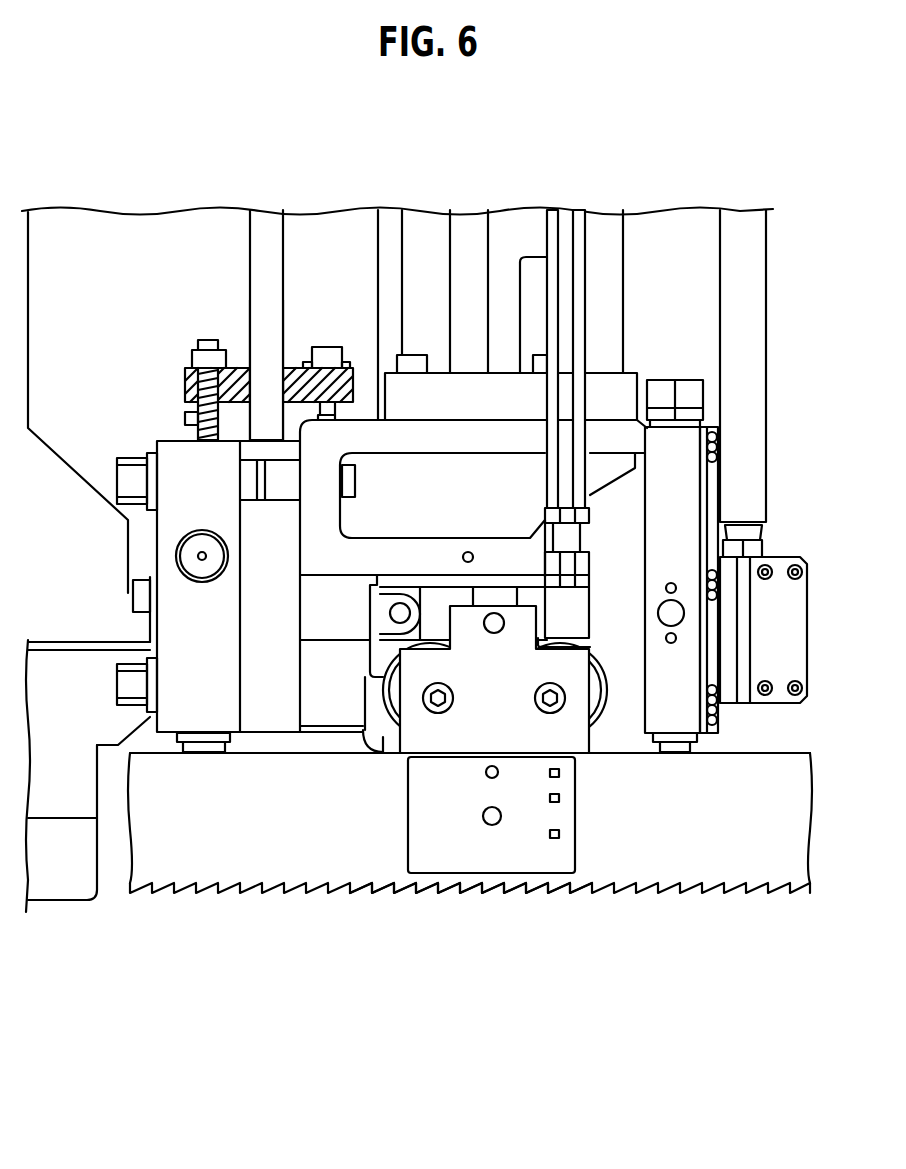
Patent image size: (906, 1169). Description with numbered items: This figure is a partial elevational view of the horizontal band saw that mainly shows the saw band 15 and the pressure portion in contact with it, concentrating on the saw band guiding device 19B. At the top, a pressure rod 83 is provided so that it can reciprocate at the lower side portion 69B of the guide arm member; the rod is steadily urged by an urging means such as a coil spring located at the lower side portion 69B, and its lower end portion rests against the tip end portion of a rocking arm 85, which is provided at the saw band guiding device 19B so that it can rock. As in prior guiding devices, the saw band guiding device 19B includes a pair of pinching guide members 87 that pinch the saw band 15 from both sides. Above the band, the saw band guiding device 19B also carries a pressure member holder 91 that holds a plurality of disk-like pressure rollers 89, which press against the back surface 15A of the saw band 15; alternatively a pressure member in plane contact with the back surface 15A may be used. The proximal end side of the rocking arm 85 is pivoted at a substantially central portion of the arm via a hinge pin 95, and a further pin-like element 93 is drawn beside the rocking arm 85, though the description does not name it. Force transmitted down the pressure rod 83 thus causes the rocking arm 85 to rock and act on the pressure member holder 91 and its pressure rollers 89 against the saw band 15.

The saw band 15 is at (313, 874).
The back surface of the saw band 15A is at (742, 753).
The saw band guiding device 19B is at (503, 908).
The lower side portion of the guide arm member 69B is at (70, 468).
The pressure rod 83 is at (562, 302).
The rocking arm 85 is at (563, 613).
The pinching guide members 87 is at (428, 863).
The pressure rollers 89 is at (390, 702).
The pressure member holder 91 is at (512, 728).
The pin 93 is at (388, 612).
The hinge pin 95 is at (494, 630).